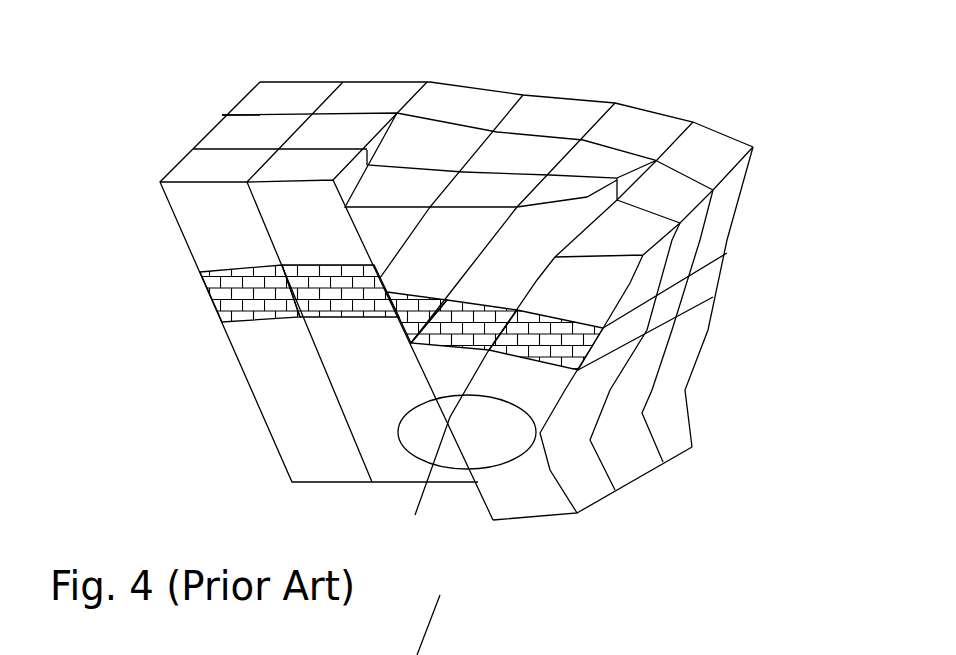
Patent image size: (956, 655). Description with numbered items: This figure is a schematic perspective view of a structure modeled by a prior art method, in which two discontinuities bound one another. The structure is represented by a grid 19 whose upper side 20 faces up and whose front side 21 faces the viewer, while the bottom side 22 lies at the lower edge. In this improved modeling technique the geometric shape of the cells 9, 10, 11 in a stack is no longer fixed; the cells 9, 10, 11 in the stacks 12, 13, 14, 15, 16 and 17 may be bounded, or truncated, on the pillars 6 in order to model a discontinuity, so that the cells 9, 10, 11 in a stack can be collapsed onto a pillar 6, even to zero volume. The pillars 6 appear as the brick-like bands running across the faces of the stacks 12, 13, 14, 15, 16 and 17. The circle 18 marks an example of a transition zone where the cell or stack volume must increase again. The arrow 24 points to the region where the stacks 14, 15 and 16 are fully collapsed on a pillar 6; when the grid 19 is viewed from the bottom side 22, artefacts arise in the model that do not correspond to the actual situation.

The pillar 6 is at (330, 368).
The cell 9 is at (205, 278).
The cell 10 is at (723, 212).
The cell 11 is at (680, 422).
The stack 12 is at (239, 231).
The stack 13 is at (323, 231).
The stack 14 is at (400, 252).
The stack 15 is at (470, 252).
The stack 16 is at (548, 249).
The stack 17 is at (615, 294).
The circle 18 is at (425, 478).
The grid 19 is at (729, 310).
The upper side of the grid 20 is at (584, 86).
The front side of the grid 21 is at (248, 460).
The bottom side of the grid 22 is at (616, 650).
The arrow 24 is at (468, 500).